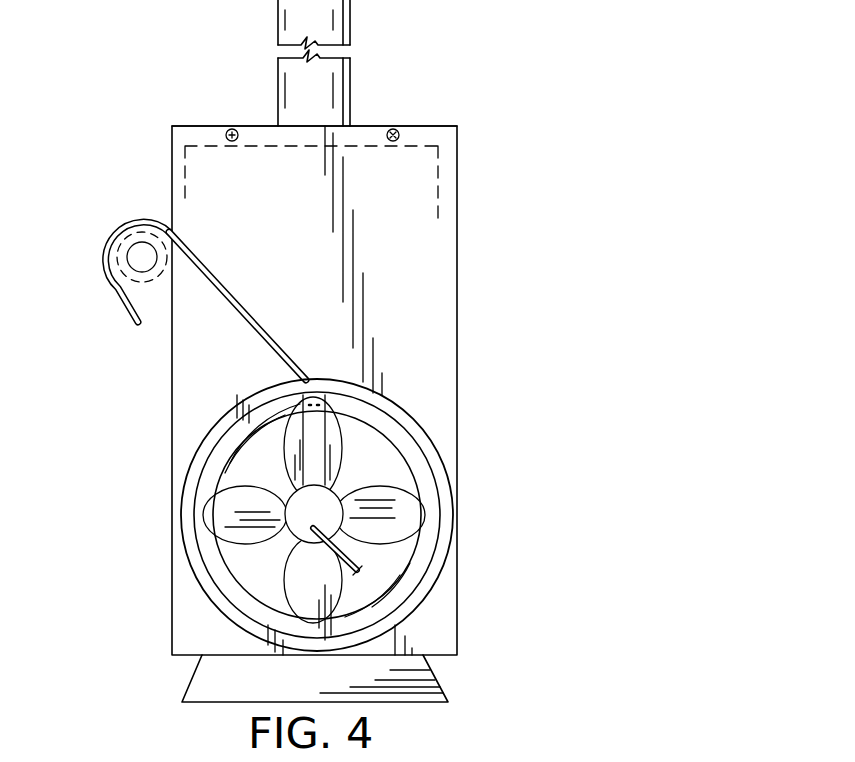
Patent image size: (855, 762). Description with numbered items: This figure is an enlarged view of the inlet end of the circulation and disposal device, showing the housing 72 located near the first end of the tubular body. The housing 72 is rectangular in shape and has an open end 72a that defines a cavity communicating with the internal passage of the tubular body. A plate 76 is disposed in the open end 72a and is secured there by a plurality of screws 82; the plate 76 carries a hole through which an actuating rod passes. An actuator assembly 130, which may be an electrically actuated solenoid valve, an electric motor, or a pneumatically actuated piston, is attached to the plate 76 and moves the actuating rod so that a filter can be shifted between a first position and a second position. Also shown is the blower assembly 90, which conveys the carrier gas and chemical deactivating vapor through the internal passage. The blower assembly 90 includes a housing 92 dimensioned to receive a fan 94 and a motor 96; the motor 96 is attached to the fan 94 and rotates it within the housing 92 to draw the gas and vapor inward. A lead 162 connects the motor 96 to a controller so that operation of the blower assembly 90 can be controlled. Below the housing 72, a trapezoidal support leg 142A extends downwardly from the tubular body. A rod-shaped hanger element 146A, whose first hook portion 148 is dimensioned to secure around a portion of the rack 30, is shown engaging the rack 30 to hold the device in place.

The rack 30 is at (124, 272).
The housing 72 is at (458, 194).
The open end 72a is at (459, 129).
The plate 76 is at (368, 132).
The screws 82 is at (228, 128).
The blower assembly 90 is at (311, 502).
The housing 92 is at (427, 457).
The fan 94 is at (408, 513).
The motor 96 is at (297, 506).
The actuator assembly 130 is at (351, 78).
The support leg 142A is at (427, 683).
The hanger element 146A is at (243, 309).
The first hook portion 148 is at (117, 235).
The lead 162 is at (357, 562).